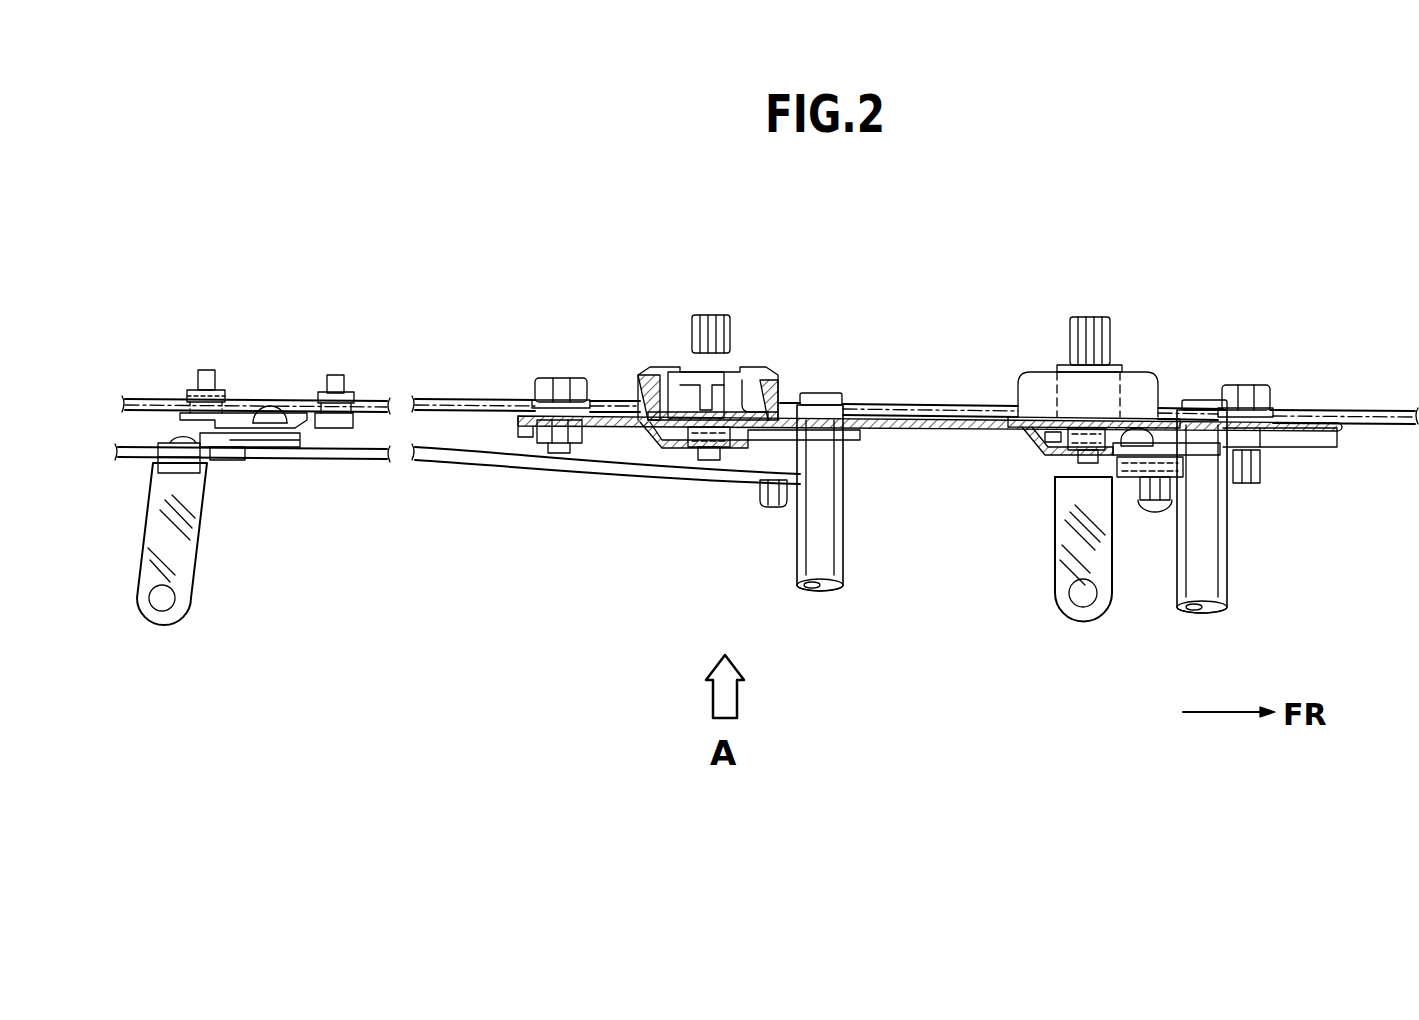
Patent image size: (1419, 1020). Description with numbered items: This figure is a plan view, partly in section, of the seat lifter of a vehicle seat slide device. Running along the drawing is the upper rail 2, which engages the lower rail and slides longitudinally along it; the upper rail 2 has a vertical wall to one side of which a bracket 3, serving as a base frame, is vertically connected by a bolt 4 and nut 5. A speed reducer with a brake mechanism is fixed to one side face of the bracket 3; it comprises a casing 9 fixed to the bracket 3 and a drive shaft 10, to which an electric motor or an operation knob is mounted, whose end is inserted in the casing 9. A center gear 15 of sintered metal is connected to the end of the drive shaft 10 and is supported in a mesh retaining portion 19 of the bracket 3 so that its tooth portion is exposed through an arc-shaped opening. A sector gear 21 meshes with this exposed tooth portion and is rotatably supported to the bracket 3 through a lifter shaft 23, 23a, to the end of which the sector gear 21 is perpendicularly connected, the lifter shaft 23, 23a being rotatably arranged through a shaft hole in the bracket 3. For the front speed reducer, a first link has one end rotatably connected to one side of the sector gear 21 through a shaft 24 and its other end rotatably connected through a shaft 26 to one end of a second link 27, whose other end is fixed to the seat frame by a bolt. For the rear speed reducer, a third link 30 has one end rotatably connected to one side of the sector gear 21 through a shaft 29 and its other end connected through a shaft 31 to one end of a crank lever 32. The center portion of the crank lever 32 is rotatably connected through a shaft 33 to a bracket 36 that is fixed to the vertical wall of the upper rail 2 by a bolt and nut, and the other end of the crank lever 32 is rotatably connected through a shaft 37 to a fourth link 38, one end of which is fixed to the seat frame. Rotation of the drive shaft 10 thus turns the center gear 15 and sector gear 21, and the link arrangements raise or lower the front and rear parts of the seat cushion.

The upper rail 2 is at (1355, 410).
The bracket 3 is at (935, 420).
The bolt 4 is at (558, 386).
The nut 5 is at (548, 433).
The casing 9 is at (770, 375).
The drive shaft 10 is at (720, 347).
The center gear 15 is at (697, 463).
The mesh retaining portion 19 is at (670, 455).
The sector gear 21 is at (766, 433).
The lifter shaft 23 is at (1220, 570).
The lifter shaft 23a is at (832, 556).
The shaft 24 is at (1140, 440).
The shaft 26 is at (1150, 500).
The second link 27 is at (1062, 570).
The shaft 29 is at (778, 510).
The third link 30 is at (623, 478).
The shaft 31 is at (233, 462).
The crank lever 32 is at (300, 440).
The shaft 33 is at (274, 450).
The bracket 36 is at (225, 432).
The shaft 37 is at (182, 472).
The fourth link 38 is at (185, 566).